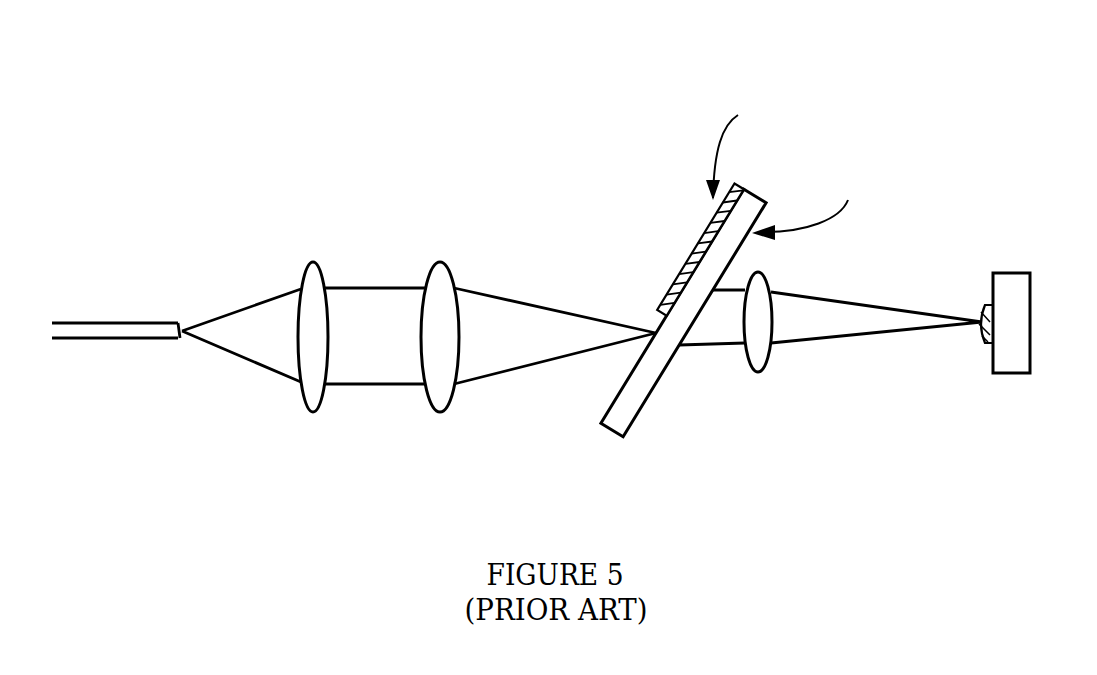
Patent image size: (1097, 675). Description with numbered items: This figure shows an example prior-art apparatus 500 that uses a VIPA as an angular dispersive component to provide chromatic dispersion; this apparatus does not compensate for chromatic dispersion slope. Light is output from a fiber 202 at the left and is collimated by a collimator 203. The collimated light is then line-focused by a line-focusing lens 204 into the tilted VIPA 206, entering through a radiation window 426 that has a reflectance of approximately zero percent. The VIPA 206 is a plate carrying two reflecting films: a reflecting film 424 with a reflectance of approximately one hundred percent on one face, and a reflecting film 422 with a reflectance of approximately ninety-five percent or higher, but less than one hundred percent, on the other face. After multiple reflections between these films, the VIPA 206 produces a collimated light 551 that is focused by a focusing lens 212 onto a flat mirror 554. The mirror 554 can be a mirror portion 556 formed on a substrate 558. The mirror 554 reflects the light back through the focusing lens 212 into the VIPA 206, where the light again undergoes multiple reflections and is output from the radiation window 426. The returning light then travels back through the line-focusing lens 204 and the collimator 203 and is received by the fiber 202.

The prior-art apparatus 500 is at (356, 68).
The fiber 202 is at (112, 322).
The collimator 203 is at (312, 262).
The line-focusing lens 204 is at (438, 262).
The VIPA 206 is at (608, 431).
The reflecting film 424 is at (692, 250).
The reflecting film 422 is at (740, 247).
The radiation window 426 is at (655, 335).
The collimated light 551 is at (712, 323).
The focusing lens 212 is at (766, 370).
The flat mirror 554 is at (997, 398).
The mirror portion 556 is at (988, 306).
The substrate 558 is at (1030, 273).